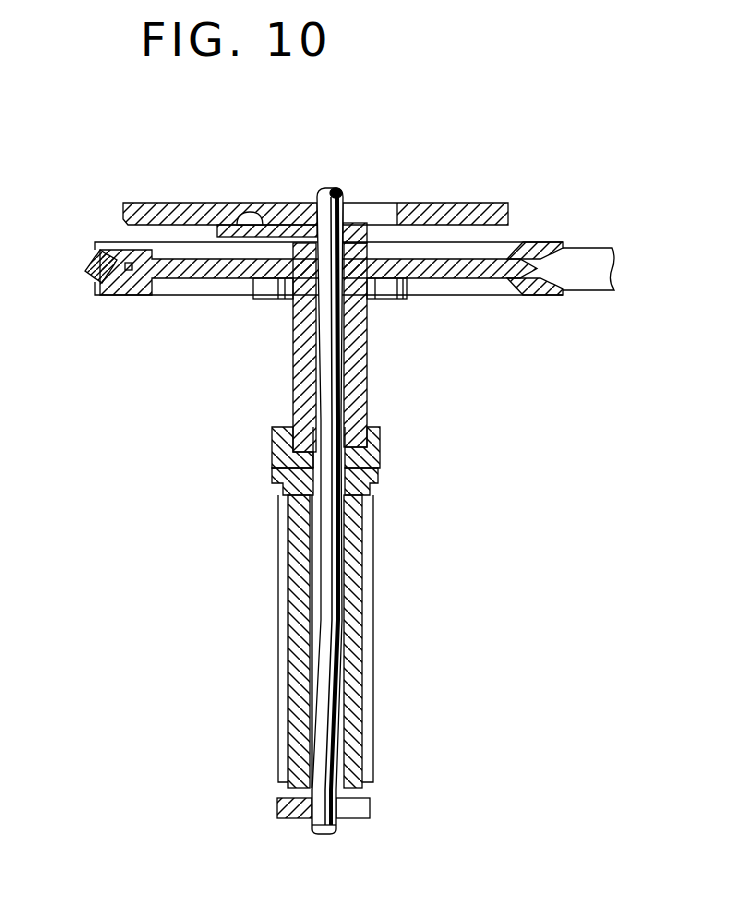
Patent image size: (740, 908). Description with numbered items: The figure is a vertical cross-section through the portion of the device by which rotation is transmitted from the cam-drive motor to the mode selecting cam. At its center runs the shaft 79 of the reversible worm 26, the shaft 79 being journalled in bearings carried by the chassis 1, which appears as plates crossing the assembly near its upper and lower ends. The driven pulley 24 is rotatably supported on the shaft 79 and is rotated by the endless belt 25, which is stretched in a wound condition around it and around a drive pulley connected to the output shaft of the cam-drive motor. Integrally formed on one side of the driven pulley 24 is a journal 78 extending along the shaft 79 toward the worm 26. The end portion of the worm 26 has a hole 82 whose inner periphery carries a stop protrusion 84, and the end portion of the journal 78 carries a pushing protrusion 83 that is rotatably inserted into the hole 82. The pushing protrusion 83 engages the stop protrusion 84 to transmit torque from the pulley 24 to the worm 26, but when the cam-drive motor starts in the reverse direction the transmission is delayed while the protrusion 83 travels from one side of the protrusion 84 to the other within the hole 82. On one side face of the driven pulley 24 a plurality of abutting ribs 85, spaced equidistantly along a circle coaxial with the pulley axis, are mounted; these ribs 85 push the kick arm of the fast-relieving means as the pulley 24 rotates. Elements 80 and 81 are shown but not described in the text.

The chassis 1 is at (466, 203).
The driven pulley 24 is at (118, 296).
The endless belt 25 is at (88, 262).
The reversible worm 26 is at (277, 642).
The journal 78 is at (367, 373).
The shaft 79 is at (335, 189).
The bushing 80 is at (354, 222).
The detent 81 is at (253, 213).
The hole 82 is at (278, 475).
The pushing protrusion 83 is at (290, 452).
The stop protrusion 84 is at (365, 440).
The abutting ribs 85 is at (262, 300).